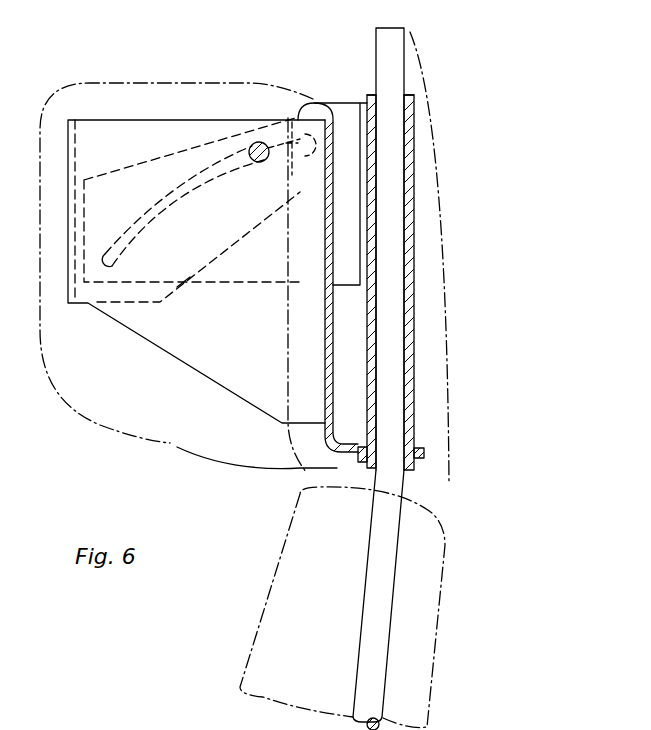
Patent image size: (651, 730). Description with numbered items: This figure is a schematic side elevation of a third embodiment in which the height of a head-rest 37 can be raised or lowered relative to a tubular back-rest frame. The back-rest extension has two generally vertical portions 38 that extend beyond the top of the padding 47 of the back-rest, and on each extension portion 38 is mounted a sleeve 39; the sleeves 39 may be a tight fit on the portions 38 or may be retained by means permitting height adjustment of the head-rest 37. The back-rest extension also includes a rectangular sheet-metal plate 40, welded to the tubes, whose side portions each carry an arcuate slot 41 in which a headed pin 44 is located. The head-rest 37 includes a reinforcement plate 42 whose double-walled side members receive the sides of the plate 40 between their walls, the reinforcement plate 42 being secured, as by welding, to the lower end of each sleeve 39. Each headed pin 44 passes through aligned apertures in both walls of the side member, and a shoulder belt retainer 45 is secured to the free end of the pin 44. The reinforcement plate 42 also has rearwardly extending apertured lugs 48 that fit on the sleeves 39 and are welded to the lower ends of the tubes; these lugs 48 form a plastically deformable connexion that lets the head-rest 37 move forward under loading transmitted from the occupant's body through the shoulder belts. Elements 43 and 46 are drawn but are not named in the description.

The head-rest 37 is at (188, 455).
The generally vertical portion of the back-rest extension 38 is at (405, 485).
The sleeve 39 is at (415, 363).
The sheet-metal plate 40 is at (342, 102).
The arcuate slot 41 is at (137, 218).
The reinforcement plate 42 is at (205, 375).
The pivot pin 43 is at (255, 143).
The headed pin 44 is at (263, 143).
The shoulder belt retainer 45 is at (295, 723).
The cover curve 46 is at (233, 462).
The padding 47 is at (257, 612).
The apertured lug 48 is at (343, 447).